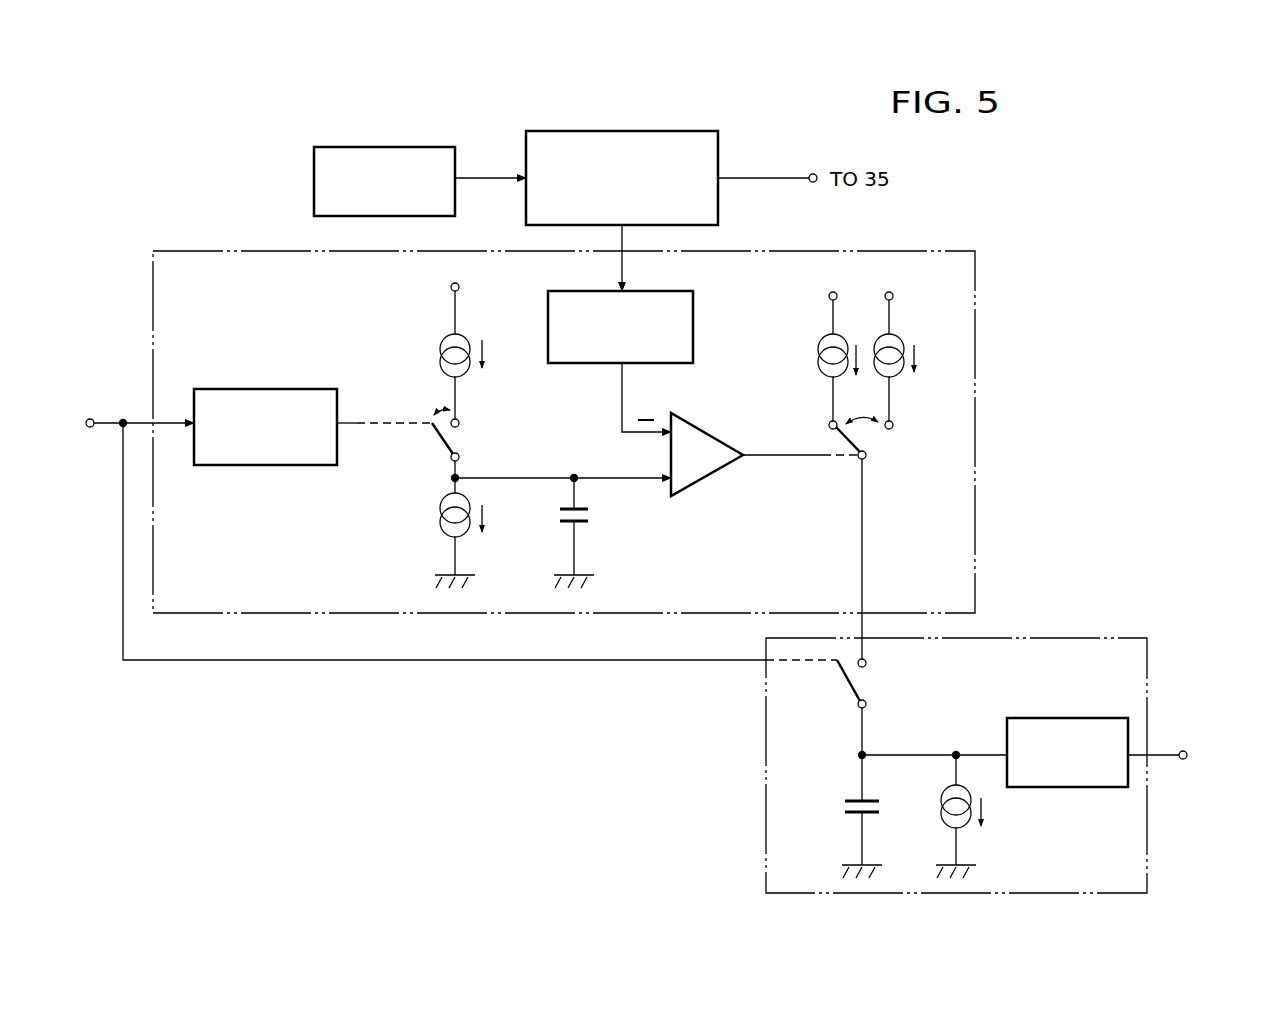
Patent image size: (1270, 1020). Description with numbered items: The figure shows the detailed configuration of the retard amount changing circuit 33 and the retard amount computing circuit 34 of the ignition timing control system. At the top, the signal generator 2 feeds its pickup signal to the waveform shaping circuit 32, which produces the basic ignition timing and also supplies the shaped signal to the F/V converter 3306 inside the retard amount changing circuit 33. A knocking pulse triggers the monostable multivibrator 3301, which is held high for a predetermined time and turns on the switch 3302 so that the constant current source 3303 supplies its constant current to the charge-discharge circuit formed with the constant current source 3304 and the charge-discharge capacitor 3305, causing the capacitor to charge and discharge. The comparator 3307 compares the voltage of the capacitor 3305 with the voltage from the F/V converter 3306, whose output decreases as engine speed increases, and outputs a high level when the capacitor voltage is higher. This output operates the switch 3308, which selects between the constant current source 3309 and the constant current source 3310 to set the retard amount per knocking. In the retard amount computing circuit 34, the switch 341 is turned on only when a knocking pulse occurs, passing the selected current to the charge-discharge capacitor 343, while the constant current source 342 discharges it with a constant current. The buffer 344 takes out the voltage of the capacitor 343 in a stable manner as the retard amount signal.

The signal generator 2 is at (340, 147).
The waveform shaping circuit 32 is at (718, 152).
The retard amount changing circuit 33 is at (975, 284).
The retard amount computing circuit 34 is at (1068, 638).
The monostable multivibrator 3301 is at (268, 389).
The switch 3302 is at (462, 435).
The constant current source 3303 is at (441, 346).
The charge-discharge circuit 3304 is at (441, 532).
The charge-discharge capacitor 3305 is at (592, 512).
The F/V converter 3306 is at (693, 311).
The comparator 3307 is at (718, 437).
The switch 3308 is at (873, 437).
The constant current source 3309 is at (820, 341).
The constant current source 3310 is at (902, 340).
The switch 341 is at (866, 668).
The constant current source 342 is at (945, 800).
The charge-discharge capacitor 343 is at (845, 808).
The buffer 344 is at (1046, 718).